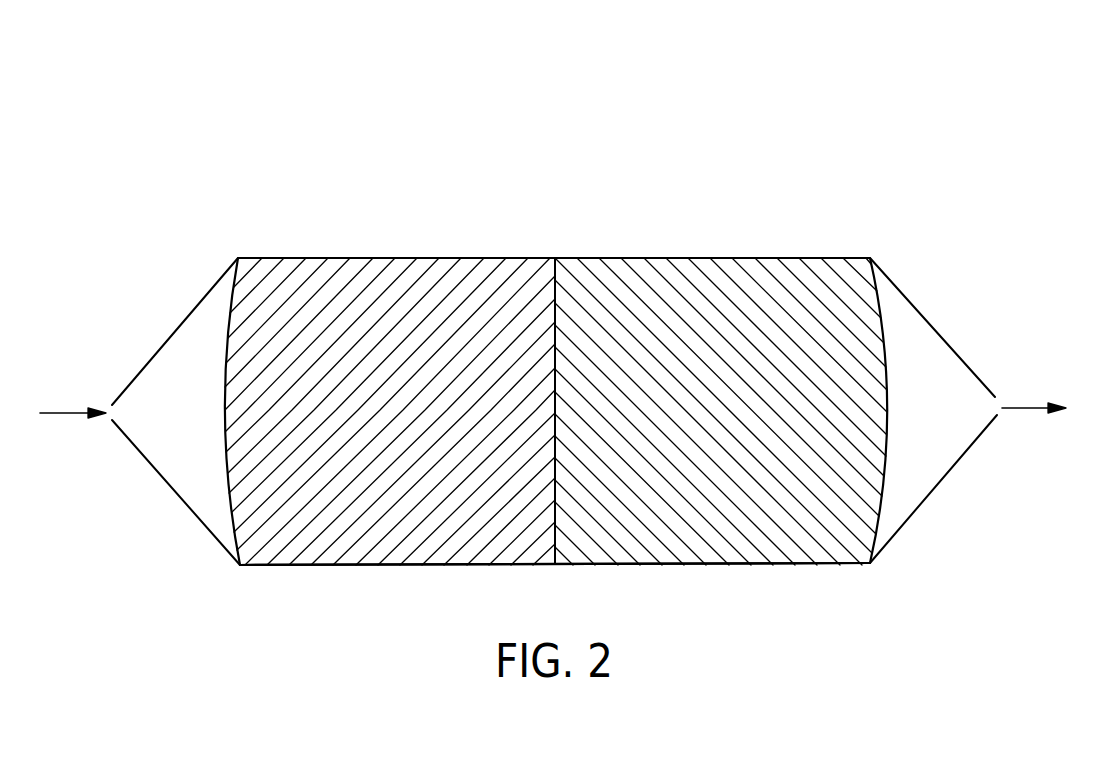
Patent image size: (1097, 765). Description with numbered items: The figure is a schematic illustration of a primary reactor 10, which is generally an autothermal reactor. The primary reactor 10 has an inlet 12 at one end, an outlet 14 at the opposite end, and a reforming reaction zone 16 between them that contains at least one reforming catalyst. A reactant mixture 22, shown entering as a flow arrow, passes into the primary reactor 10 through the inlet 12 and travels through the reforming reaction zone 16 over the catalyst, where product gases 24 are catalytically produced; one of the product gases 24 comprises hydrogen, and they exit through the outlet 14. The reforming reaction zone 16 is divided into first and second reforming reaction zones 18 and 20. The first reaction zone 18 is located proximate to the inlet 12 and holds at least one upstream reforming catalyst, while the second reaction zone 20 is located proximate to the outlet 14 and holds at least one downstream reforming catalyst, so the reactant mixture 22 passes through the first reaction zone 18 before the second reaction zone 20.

The primary reactor 10 is at (804, 161).
The inlet 12 is at (112, 404).
The outlet 14 is at (995, 397).
The reforming reaction zone 16 is at (688, 565).
The first reforming reaction zone 18 is at (404, 258).
The second reforming reaction zone 20 is at (655, 258).
The reactant mixture 22 is at (52, 413).
The product gases 24 is at (1036, 409).